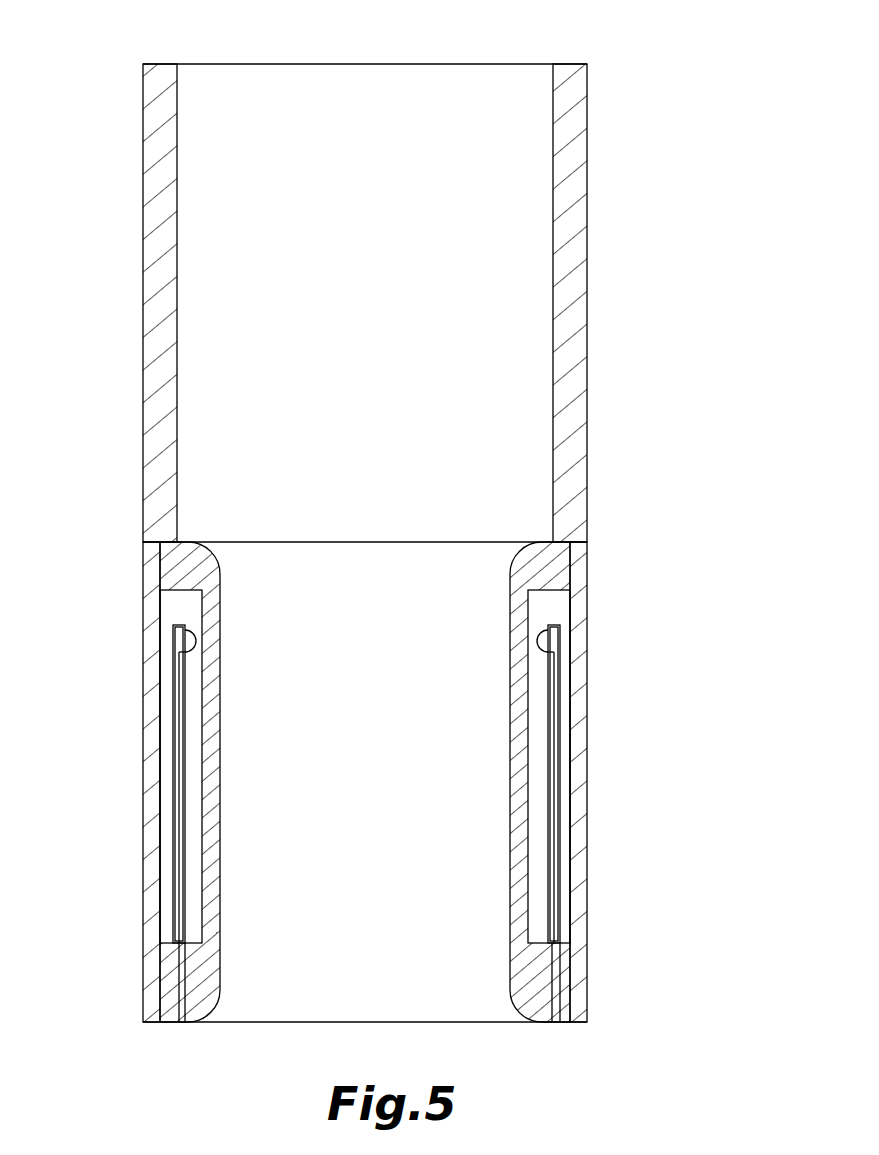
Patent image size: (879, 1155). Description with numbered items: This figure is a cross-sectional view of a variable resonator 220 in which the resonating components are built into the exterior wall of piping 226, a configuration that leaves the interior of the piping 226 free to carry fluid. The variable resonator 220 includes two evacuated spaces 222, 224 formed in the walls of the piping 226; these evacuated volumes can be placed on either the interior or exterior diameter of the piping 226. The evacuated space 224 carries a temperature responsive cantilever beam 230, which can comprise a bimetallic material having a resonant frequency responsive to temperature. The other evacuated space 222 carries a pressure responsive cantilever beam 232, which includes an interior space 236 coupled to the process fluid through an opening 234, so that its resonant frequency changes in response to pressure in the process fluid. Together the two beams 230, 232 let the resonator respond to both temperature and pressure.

The variable resonator 220 is at (413, 536).
The evacuated space 222 is at (563, 659).
The evacuated space 224 is at (165, 680).
The piping 226 is at (587, 490).
The temperature responsive cantilever beam 230 is at (175, 776).
The pressure responsive cantilever beam 232 is at (560, 742).
The opening 234 is at (556, 1022).
The interior space 236 is at (553, 848).